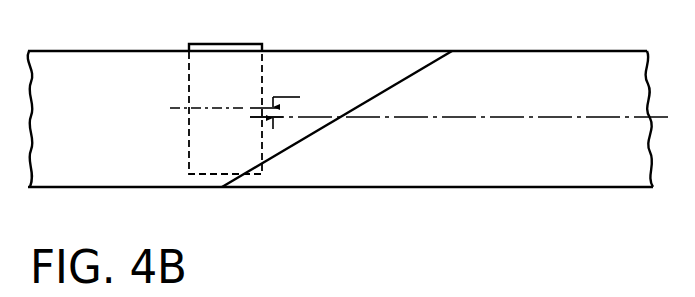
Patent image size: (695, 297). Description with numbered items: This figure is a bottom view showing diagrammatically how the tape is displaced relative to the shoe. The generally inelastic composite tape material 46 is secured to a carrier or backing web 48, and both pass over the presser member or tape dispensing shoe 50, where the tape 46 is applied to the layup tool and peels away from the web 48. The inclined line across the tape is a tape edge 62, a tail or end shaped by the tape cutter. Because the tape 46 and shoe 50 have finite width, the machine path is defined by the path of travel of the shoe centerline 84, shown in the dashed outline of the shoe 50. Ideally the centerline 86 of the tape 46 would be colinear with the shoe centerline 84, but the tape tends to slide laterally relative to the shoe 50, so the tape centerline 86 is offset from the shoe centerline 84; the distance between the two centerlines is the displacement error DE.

The composite tape material 46 is at (622, 62).
The backing web 48 is at (78, 72).
The tape dispensing shoe 50 is at (262, 47).
The tape edge 62 is at (394, 83).
The shoe centerline 84 is at (213, 104).
The tape centerline 86 is at (513, 115).
The displacement error DE is at (289, 108).